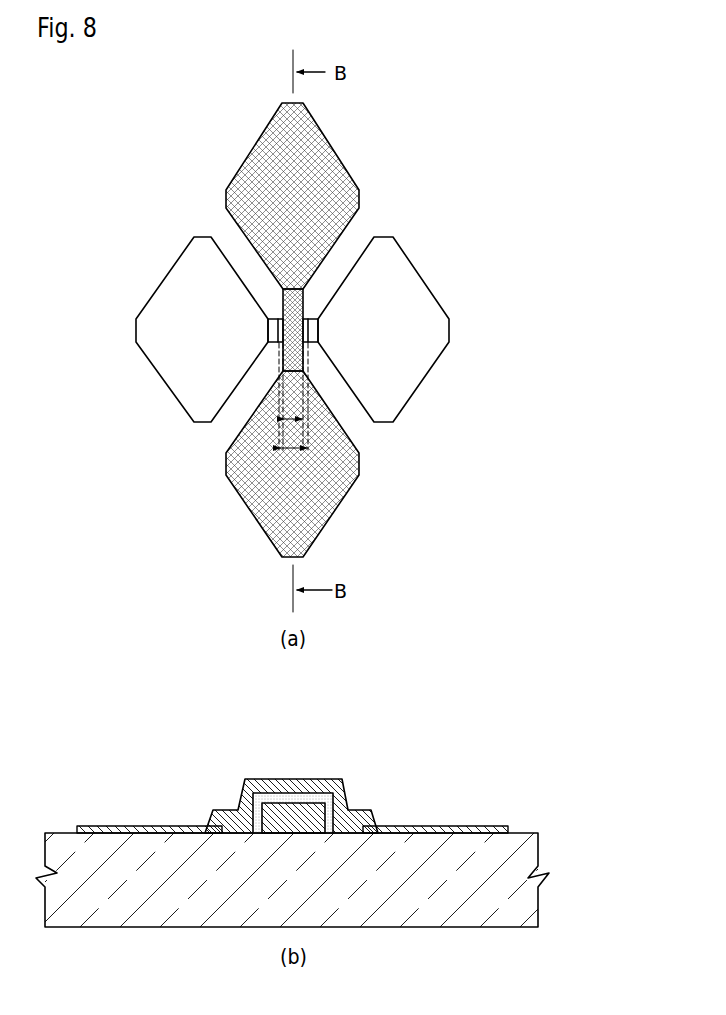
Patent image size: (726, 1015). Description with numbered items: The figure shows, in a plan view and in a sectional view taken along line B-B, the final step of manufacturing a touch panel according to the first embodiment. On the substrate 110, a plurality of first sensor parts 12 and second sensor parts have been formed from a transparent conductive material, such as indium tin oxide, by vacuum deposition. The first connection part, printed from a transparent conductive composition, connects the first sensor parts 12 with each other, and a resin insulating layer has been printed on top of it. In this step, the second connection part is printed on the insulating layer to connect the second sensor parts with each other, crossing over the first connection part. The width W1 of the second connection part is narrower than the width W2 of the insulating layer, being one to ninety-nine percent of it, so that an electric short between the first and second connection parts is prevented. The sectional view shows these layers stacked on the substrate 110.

The first sensor part 12 is at (165, 290).
The substrate 110 is at (534, 892).
The width of the second connection part W1 is at (283, 438).
The width of the insulating layer W2 is at (292, 462).